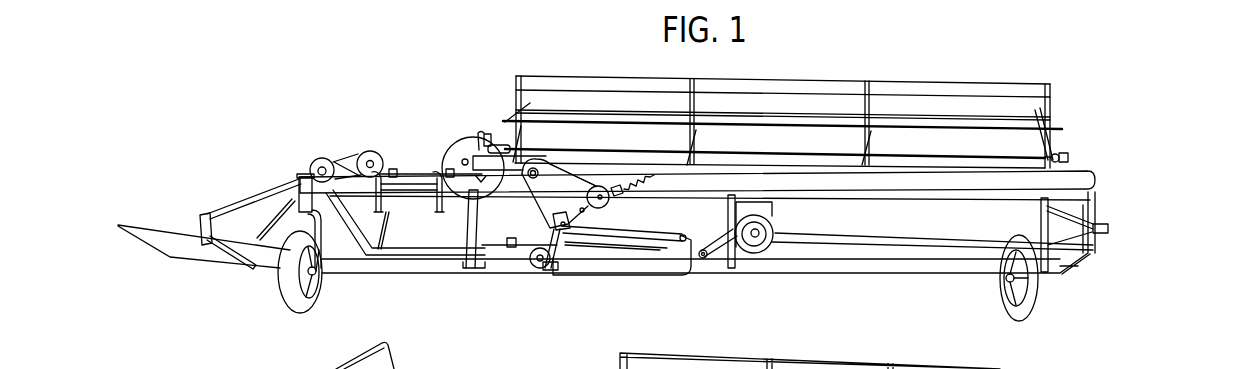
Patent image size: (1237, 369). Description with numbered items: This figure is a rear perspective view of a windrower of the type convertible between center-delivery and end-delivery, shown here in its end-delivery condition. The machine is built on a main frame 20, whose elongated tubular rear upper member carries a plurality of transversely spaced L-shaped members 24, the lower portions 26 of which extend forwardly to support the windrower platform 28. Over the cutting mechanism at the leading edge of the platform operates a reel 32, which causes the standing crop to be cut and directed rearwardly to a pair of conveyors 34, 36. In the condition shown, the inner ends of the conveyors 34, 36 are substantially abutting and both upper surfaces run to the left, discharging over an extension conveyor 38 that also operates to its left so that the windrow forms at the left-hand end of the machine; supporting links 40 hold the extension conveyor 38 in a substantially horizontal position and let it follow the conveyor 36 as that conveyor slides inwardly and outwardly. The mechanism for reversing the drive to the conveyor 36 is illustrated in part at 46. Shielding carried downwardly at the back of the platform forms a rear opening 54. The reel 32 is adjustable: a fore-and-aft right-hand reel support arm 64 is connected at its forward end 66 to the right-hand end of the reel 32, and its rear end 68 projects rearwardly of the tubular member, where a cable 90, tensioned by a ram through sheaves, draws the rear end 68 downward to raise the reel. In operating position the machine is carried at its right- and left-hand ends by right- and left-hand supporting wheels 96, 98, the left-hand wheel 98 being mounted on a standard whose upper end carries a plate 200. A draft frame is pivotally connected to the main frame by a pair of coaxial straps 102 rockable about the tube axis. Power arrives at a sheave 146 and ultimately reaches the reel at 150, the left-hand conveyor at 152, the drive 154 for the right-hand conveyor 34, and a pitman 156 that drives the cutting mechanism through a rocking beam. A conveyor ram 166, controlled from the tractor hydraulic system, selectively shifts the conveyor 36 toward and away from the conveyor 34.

The main frame 20 is at (1098, 183).
The L-shaped members 24 is at (467, 234).
The lower portions 26 is at (477, 265).
The windrower platform 28 is at (1066, 274).
The reel 32 is at (1050, 92).
The conveyor 34 is at (862, 273).
The conveyor 36 is at (647, 273).
The extension conveyor 38 is at (174, 227).
The supporting links 40 is at (267, 193).
The mechanism for reversing the drive 46 is at (538, 208).
The rear opening 54 is at (643, 218).
The right-hand reel support arm 64 is at (1096, 216).
The connection of reel support arm to reel 66 is at (1072, 158).
The rear end of reel support arm 68 is at (1109, 229).
The cable 90 is at (1100, 238).
The right-hand supporting wheel 96 is at (1024, 309).
The left-hand supporting wheel 98 is at (287, 293).
The coaxial straps 102 is at (433, 188).
The sheave 146 is at (374, 153).
The reel drive 150 is at (476, 137).
The left-hand conveyor drive 152 is at (563, 160).
The right-hand conveyor drive 154 is at (712, 258).
The pitman 156 is at (893, 241).
The conveyor ram 166 is at (502, 247).
The plate 200 is at (271, 220).